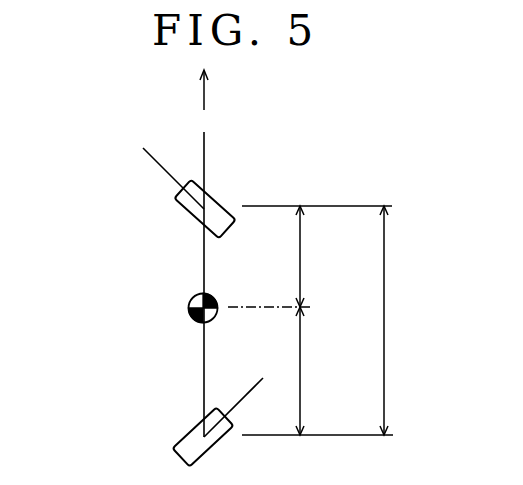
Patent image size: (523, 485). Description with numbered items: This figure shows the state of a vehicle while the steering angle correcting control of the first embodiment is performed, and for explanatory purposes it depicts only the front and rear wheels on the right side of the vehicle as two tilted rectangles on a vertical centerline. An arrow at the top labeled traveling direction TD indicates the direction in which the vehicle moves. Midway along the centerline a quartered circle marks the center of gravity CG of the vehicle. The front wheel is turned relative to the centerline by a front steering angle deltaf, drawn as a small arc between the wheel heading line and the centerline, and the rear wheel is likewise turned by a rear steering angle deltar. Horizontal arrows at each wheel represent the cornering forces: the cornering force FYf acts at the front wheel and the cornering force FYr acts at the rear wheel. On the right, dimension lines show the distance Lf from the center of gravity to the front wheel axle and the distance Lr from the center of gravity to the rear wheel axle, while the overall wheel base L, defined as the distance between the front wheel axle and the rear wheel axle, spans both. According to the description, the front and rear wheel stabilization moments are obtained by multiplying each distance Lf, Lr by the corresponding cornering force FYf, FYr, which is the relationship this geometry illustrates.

The traveling direction arrow TD is at (309, 90).
The center of gravity CG is at (251, 308).
The front wheel steering angle δf deltaf is at (204, 152).
The rear wheel steering angle δr deltar is at (244, 397).
The cornering force at the front wheel FYf is at (167, 210).
The cornering force at the rear wheel FYr is at (166, 435).
The distance from the center of gravity to the front wheel axle Lf is at (311, 256).
The distance from the center of gravity to the rear wheel axle Lr is at (313, 371).
The wheel base L is at (390, 320).